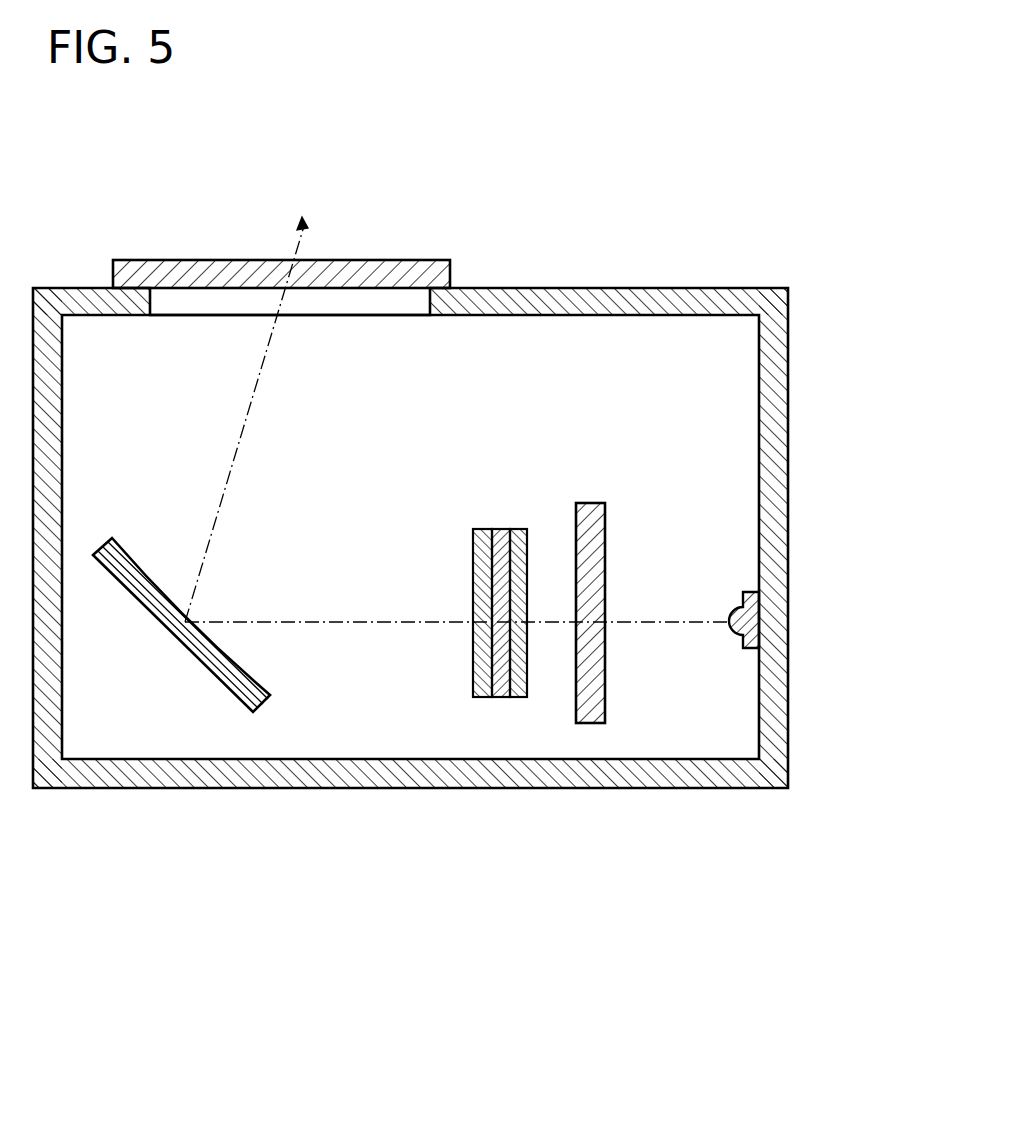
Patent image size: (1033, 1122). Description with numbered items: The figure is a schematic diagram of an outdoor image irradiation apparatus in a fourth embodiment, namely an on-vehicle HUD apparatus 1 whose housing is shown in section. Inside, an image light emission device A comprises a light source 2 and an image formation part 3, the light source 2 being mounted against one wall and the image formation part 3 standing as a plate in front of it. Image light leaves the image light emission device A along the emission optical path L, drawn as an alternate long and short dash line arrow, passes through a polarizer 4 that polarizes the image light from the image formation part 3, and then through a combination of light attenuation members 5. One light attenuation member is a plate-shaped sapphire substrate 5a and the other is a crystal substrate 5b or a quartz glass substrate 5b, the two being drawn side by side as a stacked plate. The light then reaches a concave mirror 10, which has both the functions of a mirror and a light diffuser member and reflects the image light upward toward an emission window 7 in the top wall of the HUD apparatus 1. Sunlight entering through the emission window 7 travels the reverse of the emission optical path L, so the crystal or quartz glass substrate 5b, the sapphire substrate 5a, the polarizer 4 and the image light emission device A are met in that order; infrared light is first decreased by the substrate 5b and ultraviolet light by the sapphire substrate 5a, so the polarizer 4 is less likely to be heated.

The HUD apparatus 1 is at (631, 250).
The light source 2 is at (745, 596).
The image formation part 3 is at (592, 523).
The polarizer 4 is at (522, 697).
The light attenuation member 5 is at (434, 791).
The sapphire substrate 5a is at (500, 697).
The crystal substrate or quartz glass substrate 5b is at (480, 697).
The emission window 7 is at (343, 259).
The concave mirror 10 is at (158, 620).
The emission optical path L is at (355, 625).
The image light emission device A is at (761, 553).